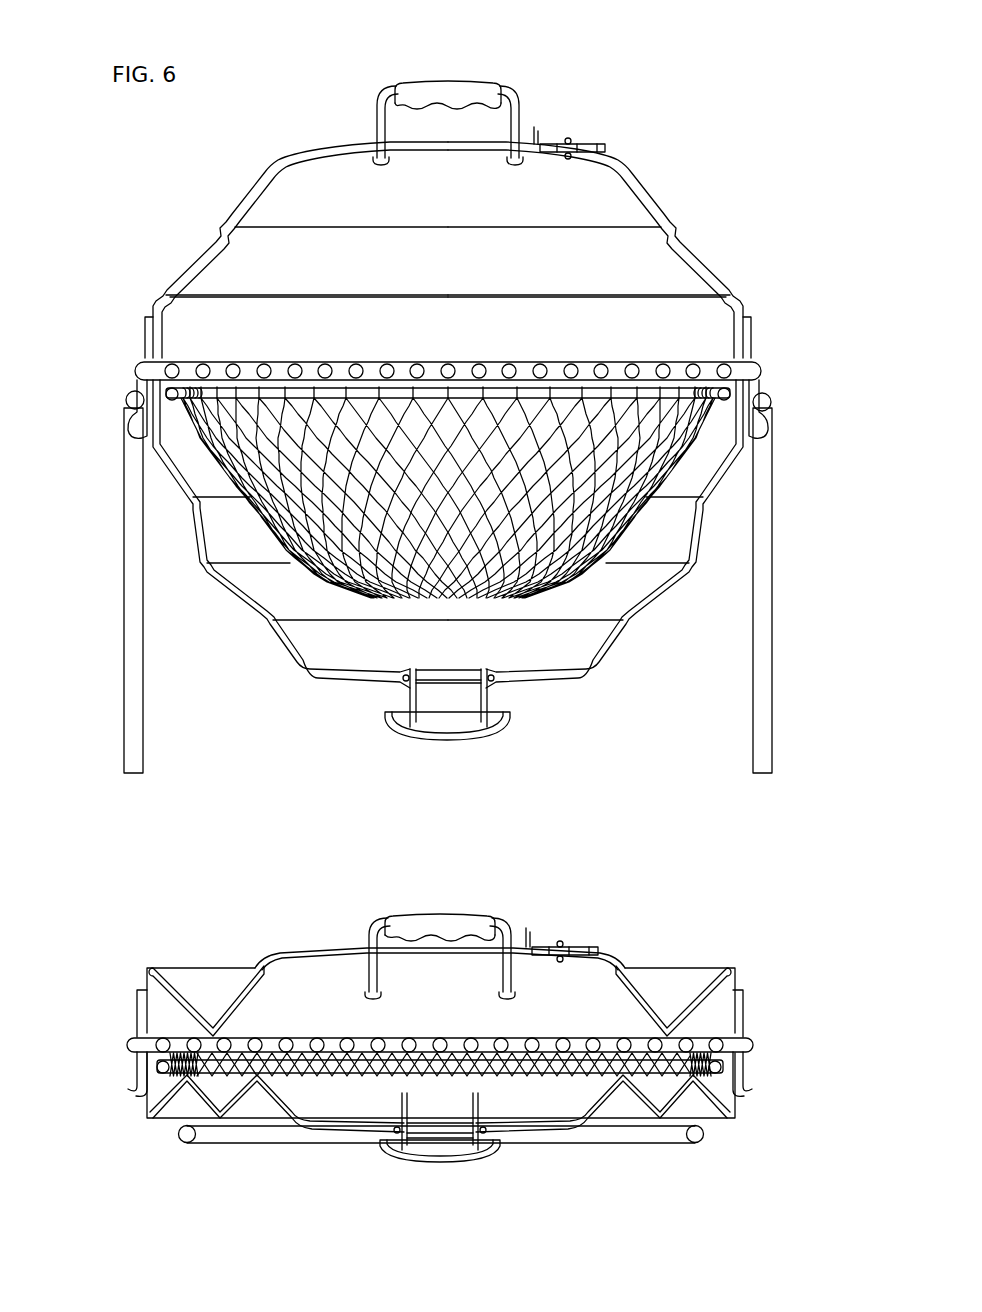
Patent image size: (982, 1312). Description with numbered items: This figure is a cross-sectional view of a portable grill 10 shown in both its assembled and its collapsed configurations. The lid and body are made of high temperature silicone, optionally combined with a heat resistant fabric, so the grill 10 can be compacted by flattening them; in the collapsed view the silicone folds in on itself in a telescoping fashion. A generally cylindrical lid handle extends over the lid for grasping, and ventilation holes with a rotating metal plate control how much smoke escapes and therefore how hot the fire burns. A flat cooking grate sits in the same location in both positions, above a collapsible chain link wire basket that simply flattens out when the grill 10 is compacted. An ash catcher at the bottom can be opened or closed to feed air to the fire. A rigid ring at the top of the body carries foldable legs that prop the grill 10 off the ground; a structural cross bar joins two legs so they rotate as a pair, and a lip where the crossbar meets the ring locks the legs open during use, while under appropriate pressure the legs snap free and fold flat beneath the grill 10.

The grill 10 is at (820, 360).